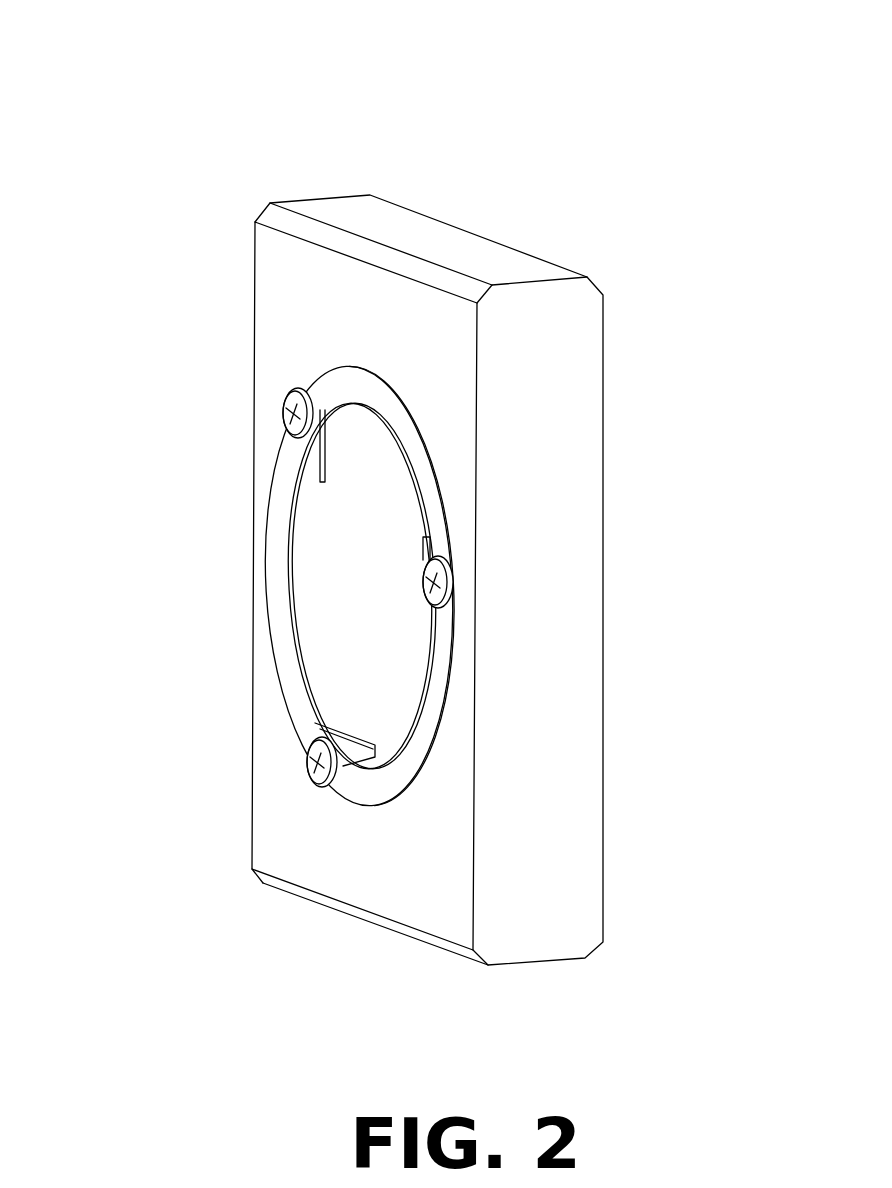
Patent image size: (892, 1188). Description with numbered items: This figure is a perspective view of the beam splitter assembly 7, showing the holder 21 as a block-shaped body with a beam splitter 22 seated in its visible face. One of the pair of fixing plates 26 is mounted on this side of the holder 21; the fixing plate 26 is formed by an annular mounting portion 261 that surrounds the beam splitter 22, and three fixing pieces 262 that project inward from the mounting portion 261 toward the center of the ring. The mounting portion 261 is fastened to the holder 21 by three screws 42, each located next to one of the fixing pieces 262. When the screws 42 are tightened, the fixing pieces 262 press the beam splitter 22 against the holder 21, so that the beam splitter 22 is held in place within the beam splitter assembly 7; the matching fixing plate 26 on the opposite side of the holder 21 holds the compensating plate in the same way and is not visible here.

The beam splitter assembly 7 is at (586, 176).
The holder 21 is at (603, 373).
The beam splitter 22 is at (398, 515).
The fixing plate 26 is at (348, 367).
The mounting portion 261 is at (436, 697).
The fixing piece 262 is at (318, 478).
The screw 42 is at (294, 396).